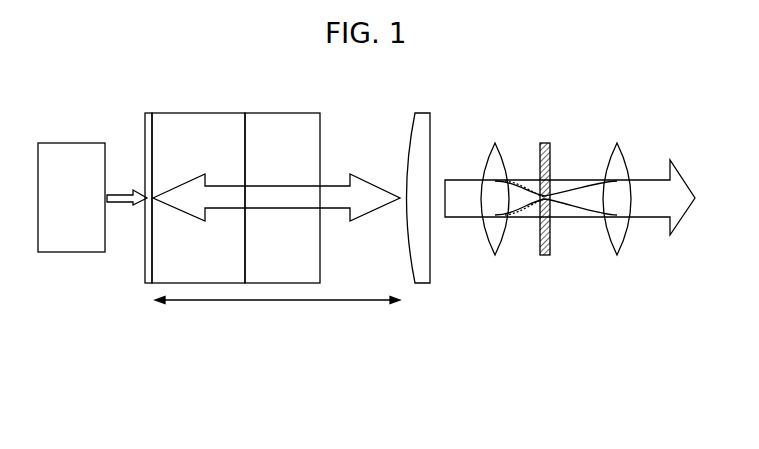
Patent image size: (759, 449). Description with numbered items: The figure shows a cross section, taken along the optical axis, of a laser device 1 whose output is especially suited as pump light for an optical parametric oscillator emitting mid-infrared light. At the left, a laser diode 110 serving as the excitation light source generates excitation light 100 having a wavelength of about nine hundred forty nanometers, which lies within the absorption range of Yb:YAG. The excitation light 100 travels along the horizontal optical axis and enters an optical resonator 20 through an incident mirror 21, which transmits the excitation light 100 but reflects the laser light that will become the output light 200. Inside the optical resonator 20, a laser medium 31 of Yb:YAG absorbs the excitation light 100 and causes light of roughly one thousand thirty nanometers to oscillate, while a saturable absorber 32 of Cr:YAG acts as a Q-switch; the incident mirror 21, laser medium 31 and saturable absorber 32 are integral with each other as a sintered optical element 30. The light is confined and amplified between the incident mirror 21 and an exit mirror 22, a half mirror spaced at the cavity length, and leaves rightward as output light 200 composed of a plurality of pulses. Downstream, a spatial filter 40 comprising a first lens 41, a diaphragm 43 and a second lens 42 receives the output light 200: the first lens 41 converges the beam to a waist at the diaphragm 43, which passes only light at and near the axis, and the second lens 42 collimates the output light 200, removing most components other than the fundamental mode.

The laser device 1 is at (449, 415).
The laser diode 110 is at (70, 143).
The excitation light 100 is at (125, 193).
The optical resonator 20 is at (291, 222).
The incident mirror 21 is at (148, 113).
The sintered optical element 30 is at (243, 178).
The laser medium 31 is at (192, 123).
The saturable absorber 32 is at (285, 113).
The exit mirror 22 is at (420, 123).
The spatial filter 40 is at (570, 228).
The first lens 41 is at (495, 157).
The diaphragm 43 is at (545, 142).
The second lens 42 is at (618, 157).
The output light 200 is at (653, 178).